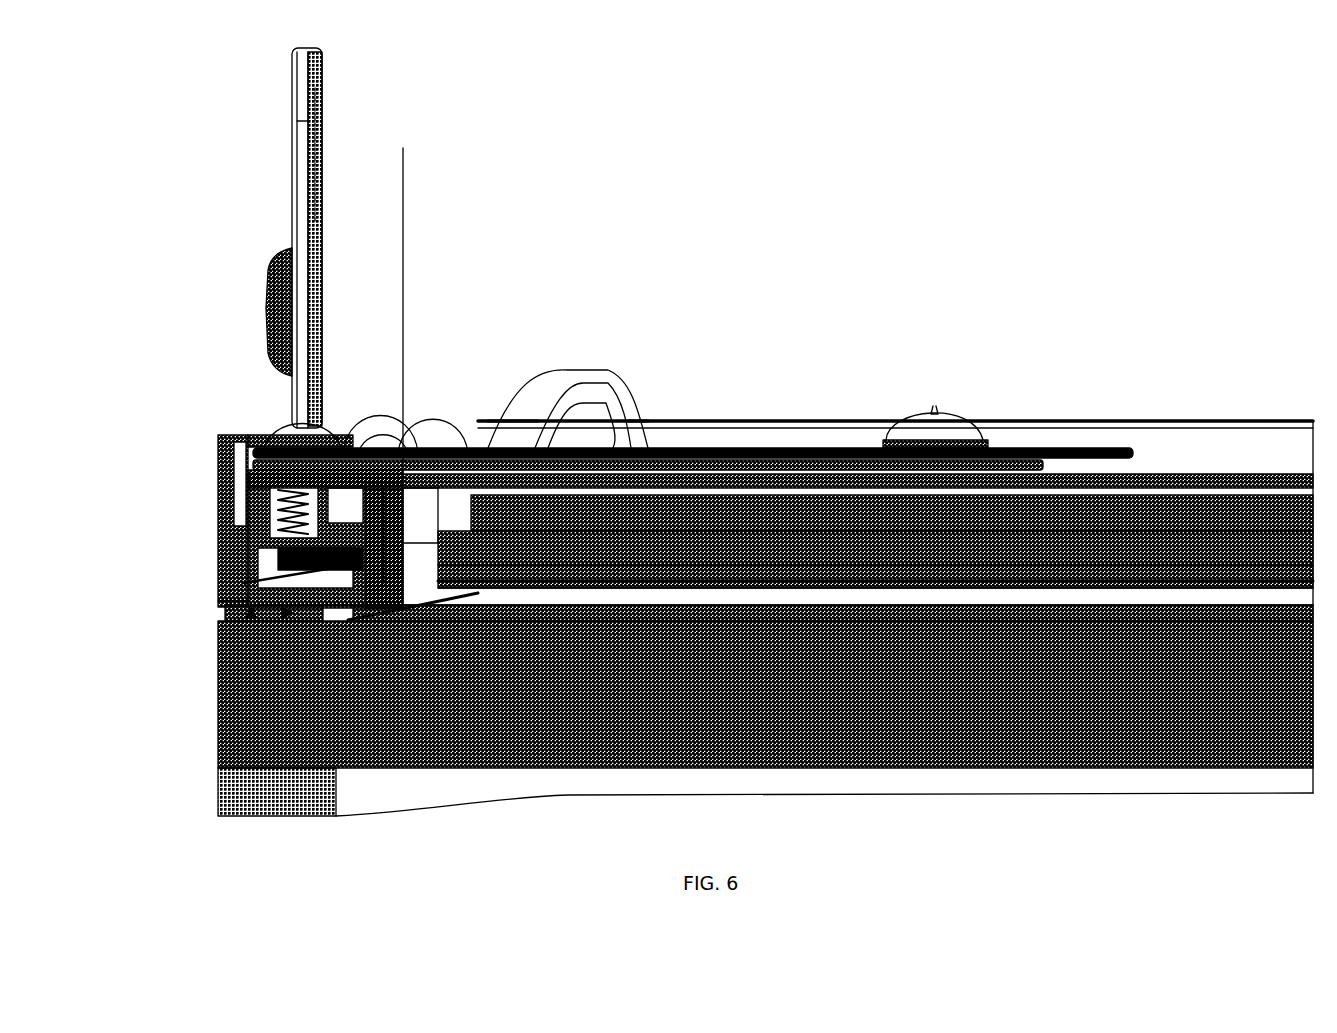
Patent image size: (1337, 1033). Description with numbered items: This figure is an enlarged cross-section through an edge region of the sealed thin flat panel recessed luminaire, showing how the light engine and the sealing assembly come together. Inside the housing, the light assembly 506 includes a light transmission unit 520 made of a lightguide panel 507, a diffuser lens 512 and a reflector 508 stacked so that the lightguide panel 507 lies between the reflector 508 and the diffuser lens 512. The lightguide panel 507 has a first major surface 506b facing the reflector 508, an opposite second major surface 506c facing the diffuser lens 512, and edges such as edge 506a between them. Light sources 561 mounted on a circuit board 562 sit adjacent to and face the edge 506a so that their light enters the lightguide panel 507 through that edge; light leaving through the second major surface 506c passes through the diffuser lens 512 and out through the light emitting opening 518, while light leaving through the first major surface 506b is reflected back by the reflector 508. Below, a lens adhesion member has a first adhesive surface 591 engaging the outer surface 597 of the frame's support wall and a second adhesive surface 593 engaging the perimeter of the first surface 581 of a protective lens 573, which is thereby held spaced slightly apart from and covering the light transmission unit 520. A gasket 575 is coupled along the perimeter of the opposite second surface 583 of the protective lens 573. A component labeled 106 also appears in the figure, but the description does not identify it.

The stylus 106 is at (300, 73).
The light sources 561 is at (395, 260).
The circuit board 562 is at (212, 530).
The light assembly 506 is at (985, 490).
The edge of the lightguide panel 506a is at (440, 400).
The first major surface 506b is at (768, 520).
The second major surface 506c is at (648, 570).
The lightguide panel 507 is at (718, 540).
The reflector 508 is at (1143, 512).
The diffuser lens 512 is at (1010, 556).
The light emitting opening 518 is at (1268, 598).
The light transmission unit 520 is at (935, 427).
The protective lens 573 is at (933, 697).
The gasket 575 is at (283, 770).
The first surface of the protective lens 581 is at (578, 612).
The second surface of the protective lens 583 is at (585, 758).
The first adhesive surface 591 is at (243, 610).
The second adhesive surface 593 is at (295, 596).
The outer surface of the support wall 597 is at (222, 585).